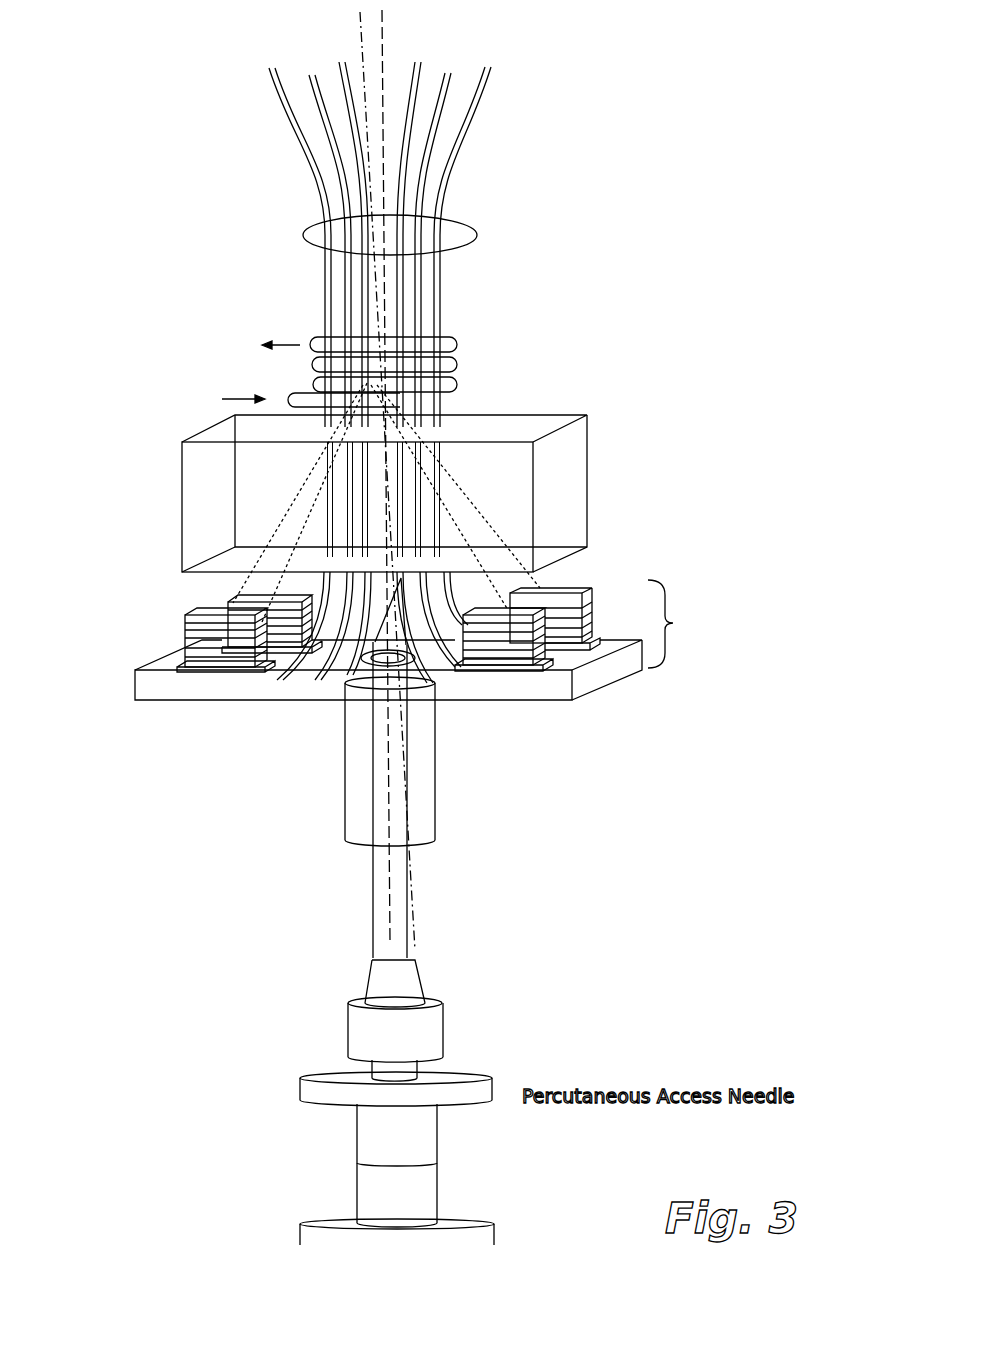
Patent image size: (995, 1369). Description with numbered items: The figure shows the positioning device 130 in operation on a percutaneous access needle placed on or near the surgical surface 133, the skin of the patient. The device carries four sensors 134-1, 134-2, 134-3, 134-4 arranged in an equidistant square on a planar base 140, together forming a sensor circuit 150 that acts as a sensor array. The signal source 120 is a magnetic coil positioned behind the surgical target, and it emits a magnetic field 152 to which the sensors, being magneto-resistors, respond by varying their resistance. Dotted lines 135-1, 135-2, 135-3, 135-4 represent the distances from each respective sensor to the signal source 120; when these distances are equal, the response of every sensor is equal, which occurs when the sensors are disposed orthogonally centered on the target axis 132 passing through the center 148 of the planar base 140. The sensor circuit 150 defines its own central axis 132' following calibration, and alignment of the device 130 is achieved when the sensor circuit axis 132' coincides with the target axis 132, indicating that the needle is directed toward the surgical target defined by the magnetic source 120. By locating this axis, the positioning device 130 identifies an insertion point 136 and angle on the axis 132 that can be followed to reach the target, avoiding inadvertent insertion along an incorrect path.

The signal source 120 is at (455, 343).
The positioning device 130 is at (370, 1032).
The axis 132 is at (385, 474).
The sensor circuit axis 132' is at (380, 479).
The surgical surface 133 is at (573, 562).
The sensor 134-1 is at (183, 619).
The sensor 134-2 is at (228, 600).
The sensor 134-3 is at (592, 600).
The sensor 134-4 is at (550, 657).
The distance line 135-1 is at (310, 473).
The distance line 135-2 is at (297, 530).
The distance line 135-3 is at (452, 478).
The distance line 135-4 is at (455, 523).
The insertion point 136 is at (375, 592).
The planar base 140 is at (508, 700).
The center 148 is at (368, 655).
The sensor circuit 150 is at (682, 624).
The magnetic field 152 is at (303, 223).